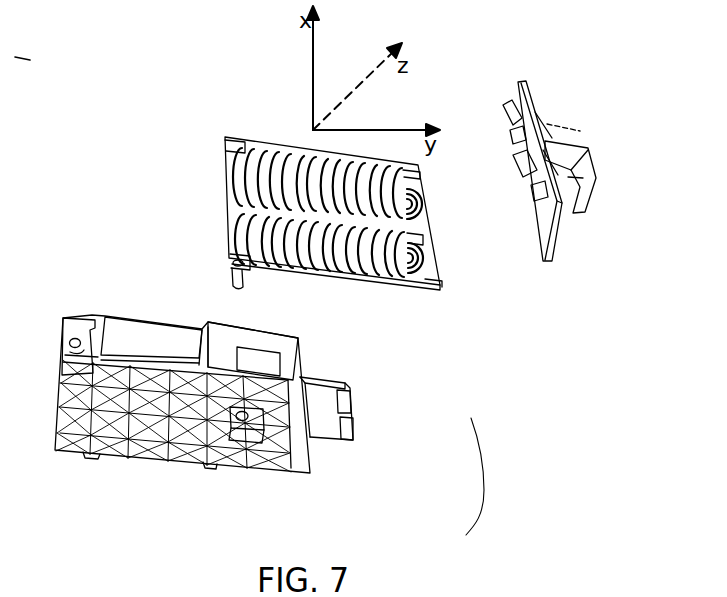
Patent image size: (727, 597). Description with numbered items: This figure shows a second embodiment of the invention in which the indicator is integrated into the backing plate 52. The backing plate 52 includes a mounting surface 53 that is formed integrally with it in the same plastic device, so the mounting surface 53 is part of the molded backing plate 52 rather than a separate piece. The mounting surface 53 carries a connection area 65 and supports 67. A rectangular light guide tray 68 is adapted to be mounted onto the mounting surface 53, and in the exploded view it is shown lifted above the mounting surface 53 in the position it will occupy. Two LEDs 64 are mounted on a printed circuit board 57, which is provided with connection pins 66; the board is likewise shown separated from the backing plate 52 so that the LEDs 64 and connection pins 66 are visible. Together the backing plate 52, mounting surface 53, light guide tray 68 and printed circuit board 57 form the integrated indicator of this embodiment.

The backing plate 52 is at (443, 473).
The mounting surface 53 is at (148, 440).
The printed circuit board 57 is at (557, 225).
The LEDs 64 is at (500, 123).
The connection area 65 is at (330, 405).
The connection pins 66 is at (580, 167).
The supports 67 is at (75, 339).
The light guide tray 68 is at (398, 248).